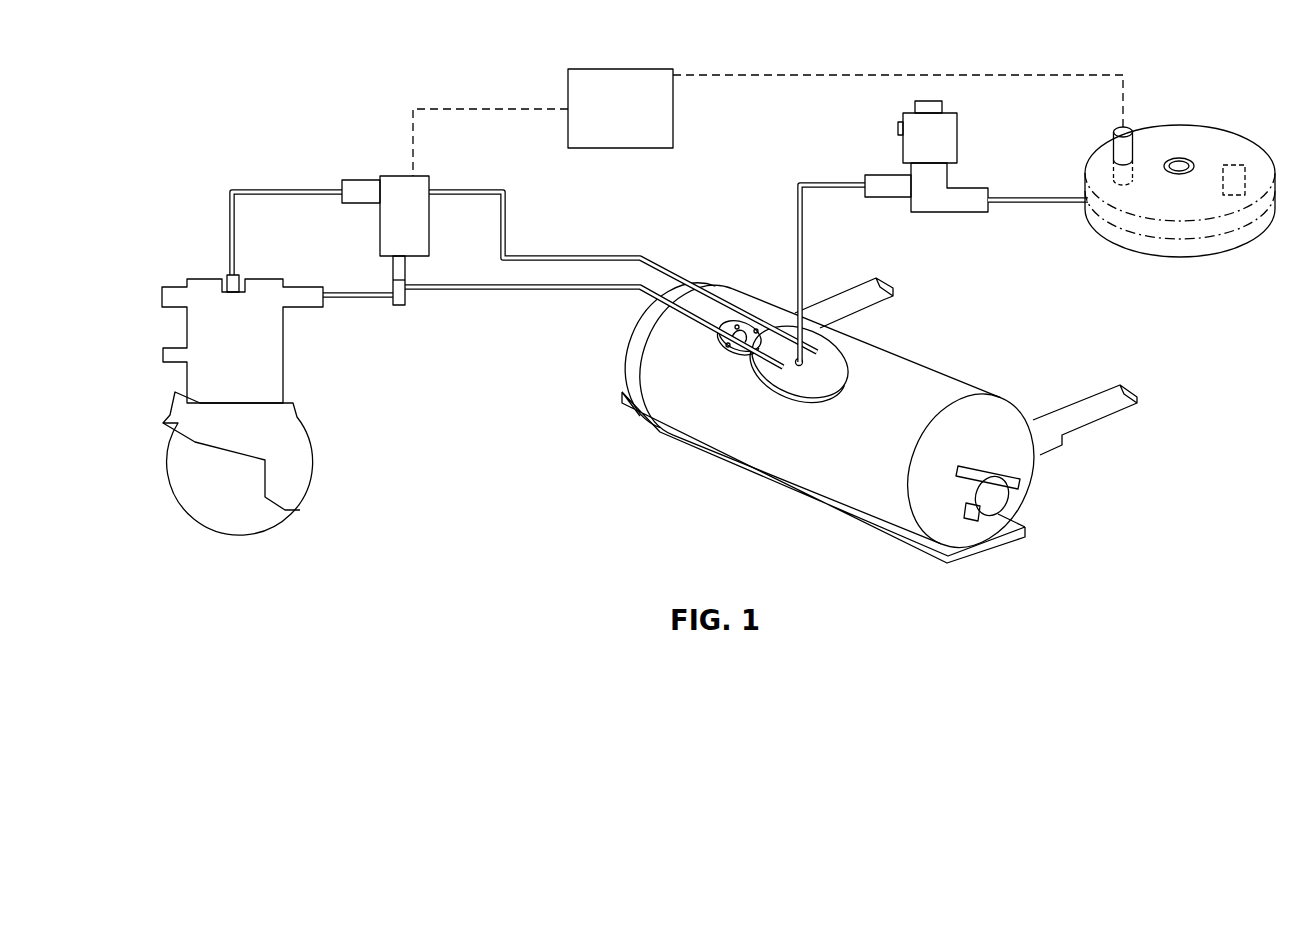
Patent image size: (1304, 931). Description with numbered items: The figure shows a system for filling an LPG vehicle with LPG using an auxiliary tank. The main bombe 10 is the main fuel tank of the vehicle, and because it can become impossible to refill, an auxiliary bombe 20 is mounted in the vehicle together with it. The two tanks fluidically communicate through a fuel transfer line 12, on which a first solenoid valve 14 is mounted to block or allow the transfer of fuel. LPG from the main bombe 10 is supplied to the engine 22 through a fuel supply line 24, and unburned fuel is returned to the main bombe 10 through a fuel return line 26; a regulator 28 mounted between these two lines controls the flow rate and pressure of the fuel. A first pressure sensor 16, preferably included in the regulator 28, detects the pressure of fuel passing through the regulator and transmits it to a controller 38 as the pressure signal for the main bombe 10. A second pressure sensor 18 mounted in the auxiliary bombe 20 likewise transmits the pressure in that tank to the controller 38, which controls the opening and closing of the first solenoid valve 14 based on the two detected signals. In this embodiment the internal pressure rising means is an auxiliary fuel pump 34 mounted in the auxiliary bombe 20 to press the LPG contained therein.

The main bombe 10 is at (768, 458).
The fuel transfer line 12 is at (797, 208).
The first solenoid valve 14 is at (933, 197).
The first pressure sensor 16 is at (405, 272).
The second pressure sensor 18 is at (1130, 143).
The auxiliary bombe 20 is at (1120, 227).
The engine 22 is at (268, 345).
The fuel supply line 24 is at (505, 290).
The fuel return line 26 is at (558, 255).
The regulator 28 is at (400, 185).
The auxiliary fuel pump 34 is at (1224, 167).
The controller 38 is at (568, 80).